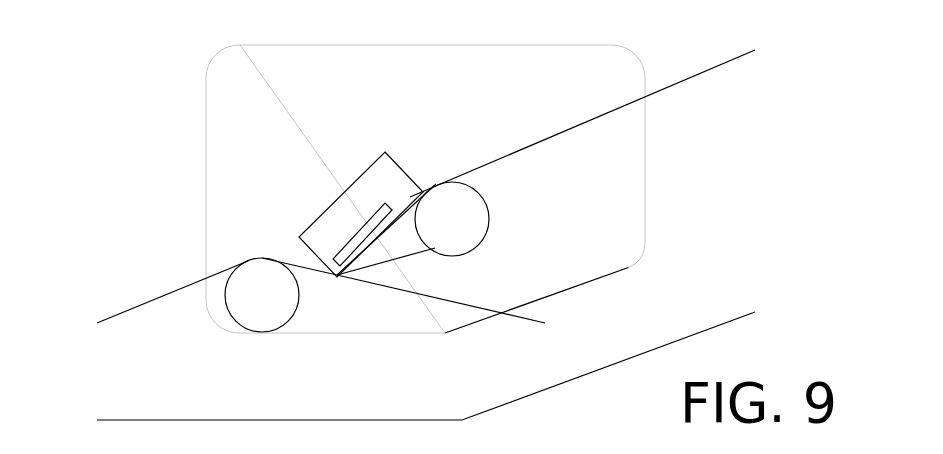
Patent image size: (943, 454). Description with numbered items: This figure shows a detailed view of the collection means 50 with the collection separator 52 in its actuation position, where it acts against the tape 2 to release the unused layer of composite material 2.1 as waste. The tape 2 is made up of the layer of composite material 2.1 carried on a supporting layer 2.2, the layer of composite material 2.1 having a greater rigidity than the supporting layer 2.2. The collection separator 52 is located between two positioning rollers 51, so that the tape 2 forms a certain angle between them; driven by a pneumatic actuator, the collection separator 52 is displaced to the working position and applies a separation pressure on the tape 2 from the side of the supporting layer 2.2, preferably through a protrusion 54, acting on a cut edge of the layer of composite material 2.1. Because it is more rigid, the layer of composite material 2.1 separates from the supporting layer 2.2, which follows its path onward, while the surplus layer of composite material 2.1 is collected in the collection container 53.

The collection means 50 is at (759, 145).
The tape 2 is at (165, 293).
The layer of composite material 2.1 is at (512, 317).
The supporting layer 2.2 is at (573, 127).
The positioning rollers 51 is at (263, 295).
The collection separator 52 is at (347, 212).
The collection container 53 is at (172, 420).
The protrusion 54 is at (331, 268).